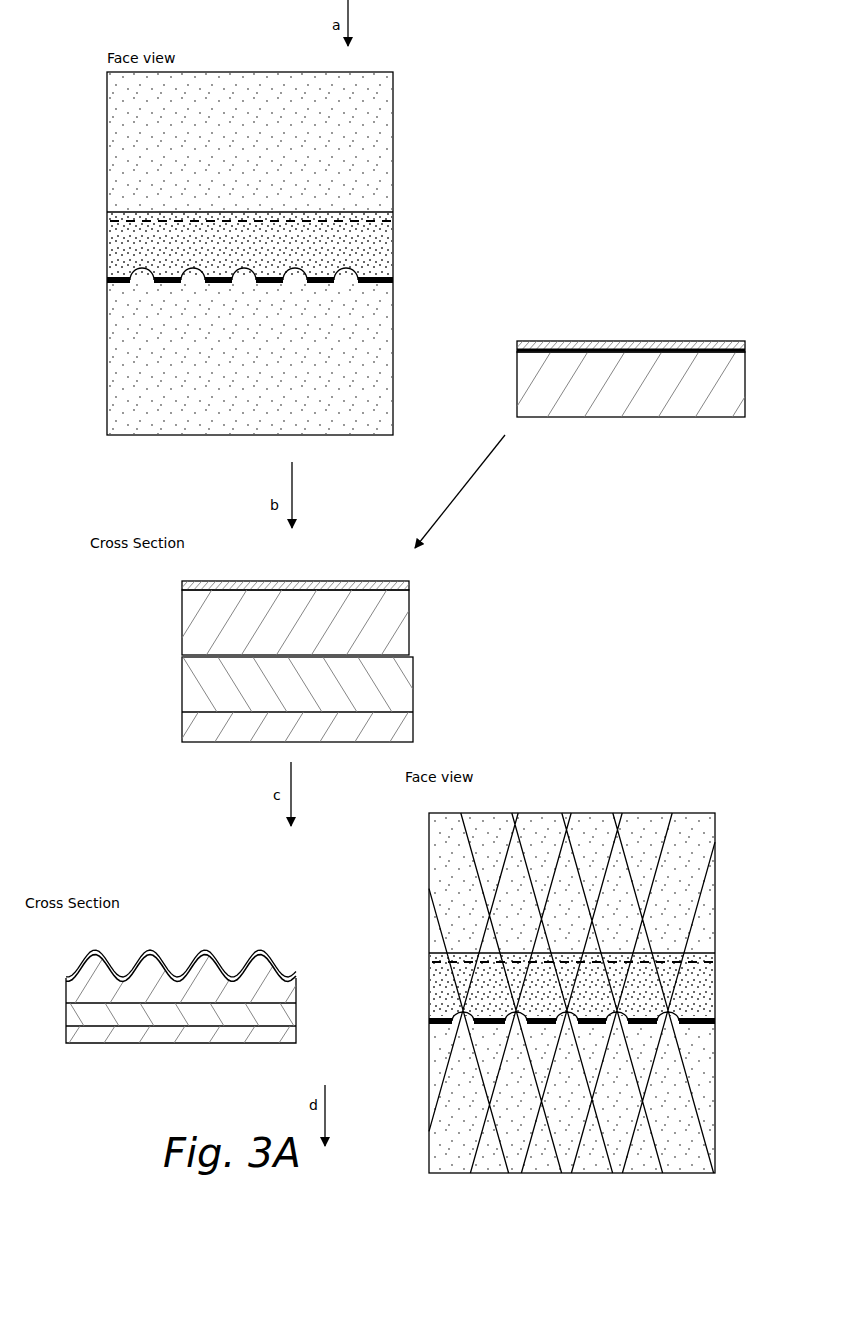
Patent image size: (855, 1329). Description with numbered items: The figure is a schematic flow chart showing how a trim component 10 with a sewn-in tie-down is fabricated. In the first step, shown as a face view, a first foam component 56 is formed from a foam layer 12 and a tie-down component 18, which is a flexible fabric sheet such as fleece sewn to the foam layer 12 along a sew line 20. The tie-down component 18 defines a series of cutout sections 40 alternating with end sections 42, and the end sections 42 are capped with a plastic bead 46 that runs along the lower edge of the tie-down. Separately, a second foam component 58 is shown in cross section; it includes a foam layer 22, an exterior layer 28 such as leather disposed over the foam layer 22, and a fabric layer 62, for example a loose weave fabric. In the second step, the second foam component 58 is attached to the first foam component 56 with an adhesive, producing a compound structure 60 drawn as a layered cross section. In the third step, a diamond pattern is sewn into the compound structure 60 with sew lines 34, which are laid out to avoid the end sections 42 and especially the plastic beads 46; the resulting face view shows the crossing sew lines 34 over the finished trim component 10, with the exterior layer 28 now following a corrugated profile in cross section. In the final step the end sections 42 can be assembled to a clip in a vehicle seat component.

The trim component 10 is at (420, 688).
The foam layer 12 is at (387, 125).
The tie-down component 18 is at (390, 247).
The sew line 20 is at (155, 222).
The foam layer 22 is at (688, 403).
The exterior layer 28 is at (580, 340).
The sew lines 34 is at (468, 857).
The cutout sections 40 is at (404, 670).
The end sections 42 is at (696, 1030).
The plastic bead 46 is at (413, 673).
The first foam component 56 is at (411, 76).
The second foam component 58 is at (419, 629).
The compound structure 60 is at (428, 594).
The fabric layer 62 is at (517, 351).